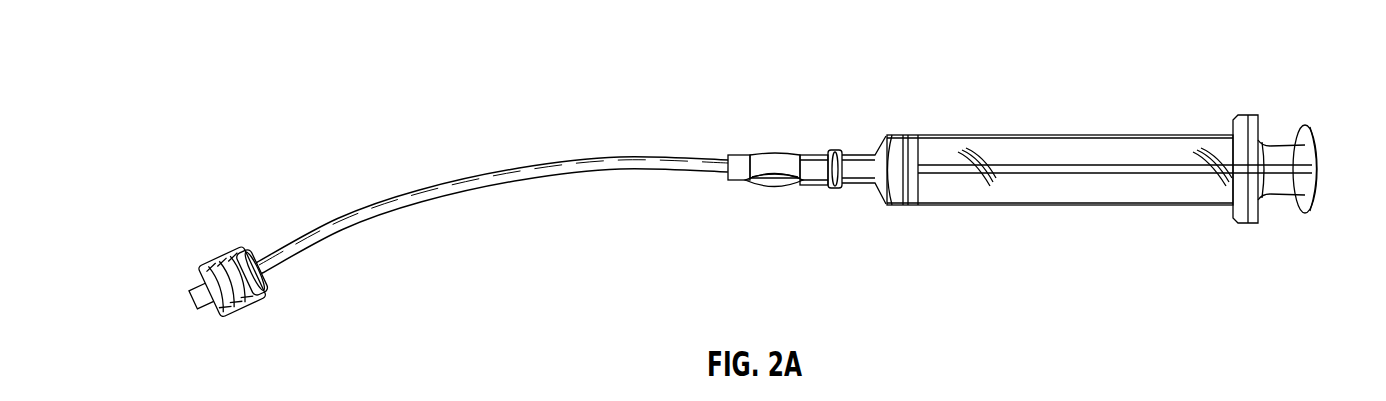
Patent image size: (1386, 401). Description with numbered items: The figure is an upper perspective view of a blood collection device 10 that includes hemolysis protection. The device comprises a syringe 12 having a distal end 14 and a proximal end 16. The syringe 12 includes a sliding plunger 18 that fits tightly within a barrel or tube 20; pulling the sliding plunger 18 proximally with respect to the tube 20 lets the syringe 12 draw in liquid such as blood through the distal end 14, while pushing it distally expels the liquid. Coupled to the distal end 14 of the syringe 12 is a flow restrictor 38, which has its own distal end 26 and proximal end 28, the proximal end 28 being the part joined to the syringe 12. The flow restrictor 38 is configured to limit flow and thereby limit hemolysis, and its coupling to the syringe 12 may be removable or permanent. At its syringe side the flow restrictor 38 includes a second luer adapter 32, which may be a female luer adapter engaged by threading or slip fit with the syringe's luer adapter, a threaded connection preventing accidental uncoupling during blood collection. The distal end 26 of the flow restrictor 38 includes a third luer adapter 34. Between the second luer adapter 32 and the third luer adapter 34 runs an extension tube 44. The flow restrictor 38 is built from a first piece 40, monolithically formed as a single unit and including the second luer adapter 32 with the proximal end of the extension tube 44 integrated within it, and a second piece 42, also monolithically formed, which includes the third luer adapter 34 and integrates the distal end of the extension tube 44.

The blood collection device 10 is at (1310, 55).
The syringe 12 is at (1145, 120).
The distal end 14 is at (870, 138).
The proximal end 16 is at (1320, 147).
The sliding plunger 18 is at (1273, 142).
The barrel or tube 20 is at (1075, 207).
The distal end 26 is at (229, 277).
The proximal end 28 is at (818, 205).
The second luer adapter 32 is at (833, 150).
The third luer adapter 34 is at (240, 313).
The flow restrictor 38 is at (566, 142).
The first piece 40 is at (773, 160).
The second piece 42 is at (218, 252).
The extension tube 44 is at (540, 177).